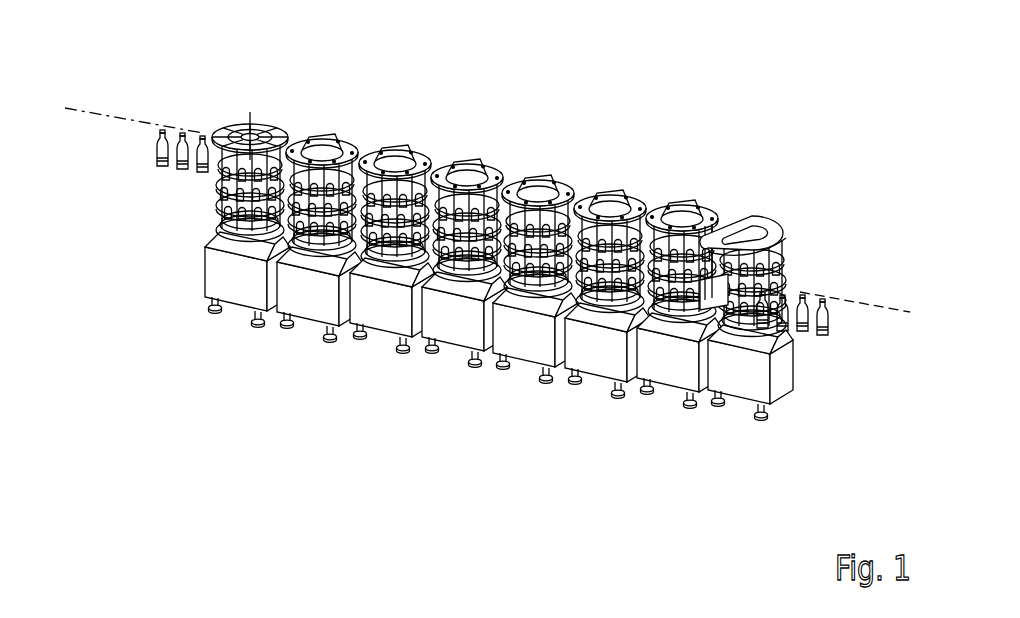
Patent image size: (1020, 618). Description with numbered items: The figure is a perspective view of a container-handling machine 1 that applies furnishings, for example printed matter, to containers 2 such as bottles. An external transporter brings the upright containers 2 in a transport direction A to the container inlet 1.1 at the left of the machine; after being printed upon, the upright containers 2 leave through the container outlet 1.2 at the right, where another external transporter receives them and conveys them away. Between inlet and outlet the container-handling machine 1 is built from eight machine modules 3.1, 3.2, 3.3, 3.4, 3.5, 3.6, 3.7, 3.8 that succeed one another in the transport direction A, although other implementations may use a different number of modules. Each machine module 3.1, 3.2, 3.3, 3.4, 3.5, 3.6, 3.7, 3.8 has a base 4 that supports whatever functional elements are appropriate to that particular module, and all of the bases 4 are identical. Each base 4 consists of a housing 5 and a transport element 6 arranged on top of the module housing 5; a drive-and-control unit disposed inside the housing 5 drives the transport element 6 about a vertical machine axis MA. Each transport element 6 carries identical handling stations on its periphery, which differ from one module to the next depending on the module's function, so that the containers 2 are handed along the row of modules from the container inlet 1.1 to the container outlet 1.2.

The container-handling machine 1 is at (738, 116).
The container inlet 1.1 is at (167, 185).
The container outlet 1.2 is at (813, 347).
The container 2 is at (157, 157).
The machine module 3.1 is at (252, 107).
The machine module 3.2 is at (333, 133).
The machine module 3.3 is at (400, 143).
The machine module 3.4 is at (473, 155).
The machine module 3.5 is at (548, 168).
The machine module 3.6 is at (620, 180).
The machine module 3.7 is at (685, 200).
The machine module 3.8 is at (760, 217).
The base 4 is at (225, 217).
The housing 5 is at (230, 283).
The transport element 6 is at (274, 118).
The transport direction A is at (132, 80).
The machine axis MA is at (325, 122).